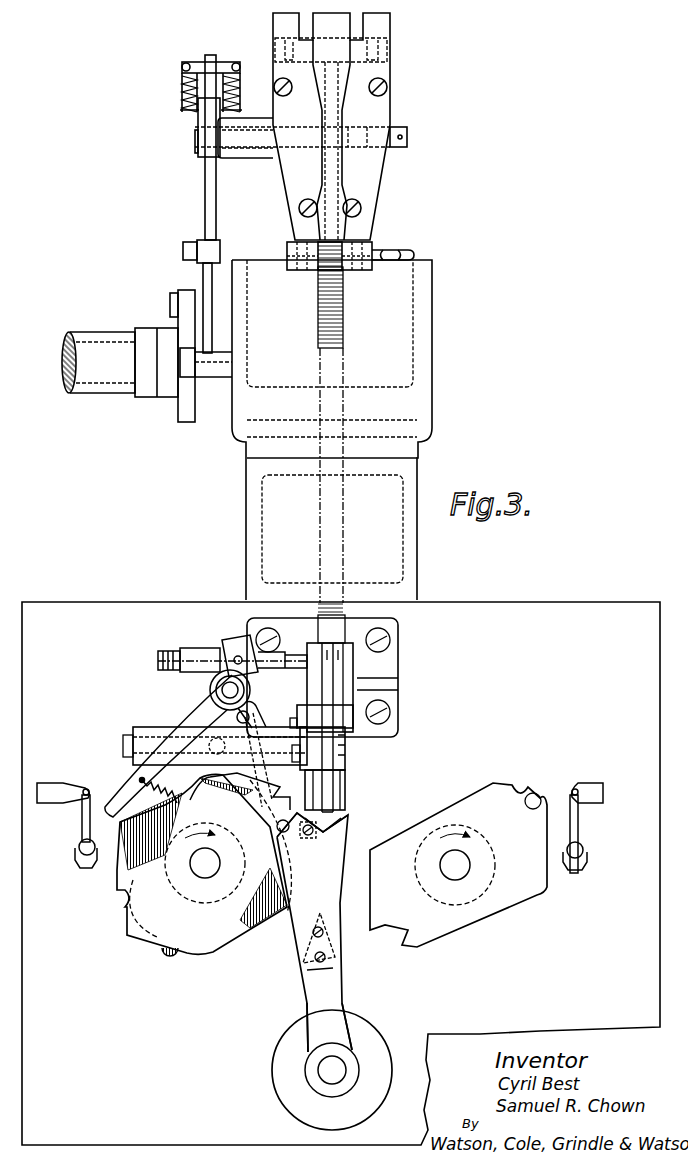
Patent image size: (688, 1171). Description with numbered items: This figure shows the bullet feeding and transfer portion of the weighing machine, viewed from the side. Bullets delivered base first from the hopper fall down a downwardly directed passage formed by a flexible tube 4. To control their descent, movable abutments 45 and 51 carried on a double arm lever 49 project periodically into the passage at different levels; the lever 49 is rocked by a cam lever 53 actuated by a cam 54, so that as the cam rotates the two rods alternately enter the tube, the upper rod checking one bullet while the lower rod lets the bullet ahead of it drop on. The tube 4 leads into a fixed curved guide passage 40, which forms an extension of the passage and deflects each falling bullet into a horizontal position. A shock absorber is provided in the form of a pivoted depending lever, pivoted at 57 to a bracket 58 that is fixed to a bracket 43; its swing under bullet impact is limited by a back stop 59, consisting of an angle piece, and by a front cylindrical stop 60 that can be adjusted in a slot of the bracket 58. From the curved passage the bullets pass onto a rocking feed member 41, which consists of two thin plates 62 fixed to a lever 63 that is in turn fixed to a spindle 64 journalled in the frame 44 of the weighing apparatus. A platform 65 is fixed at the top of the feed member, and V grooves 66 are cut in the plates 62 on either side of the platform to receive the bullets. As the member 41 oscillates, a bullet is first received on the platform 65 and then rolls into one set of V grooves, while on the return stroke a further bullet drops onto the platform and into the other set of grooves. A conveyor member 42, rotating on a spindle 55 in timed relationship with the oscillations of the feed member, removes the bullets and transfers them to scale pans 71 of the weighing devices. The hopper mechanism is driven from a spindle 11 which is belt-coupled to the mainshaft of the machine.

The flexible tube 4 is at (343, 322).
The spindle 11 is at (64, 362).
The curved guide passage 40 is at (340, 785).
The rocking feed member 41 is at (352, 832).
The conveyor member 42 is at (212, 948).
The bracket 43 is at (398, 636).
The frame 44 is at (553, 618).
The movable abutment 45 is at (160, 656).
The double arm lever 49 is at (222, 698).
The movable abutment 51 is at (123, 745).
The cam lever 53 is at (130, 793).
The cam 54 is at (178, 950).
The spindle 55 is at (203, 870).
The pivot 57 is at (345, 665).
The bracket 58 is at (307, 685).
The back stop 59 is at (335, 712).
The front cylindrical stop 60 is at (330, 757).
The thin plates 62 is at (335, 898).
The lever 63 is at (327, 993).
The spindle 64 is at (328, 1070).
The platform 65 is at (267, 827).
The V grooves 66 is at (323, 843).
The scale pans 71 is at (90, 862).